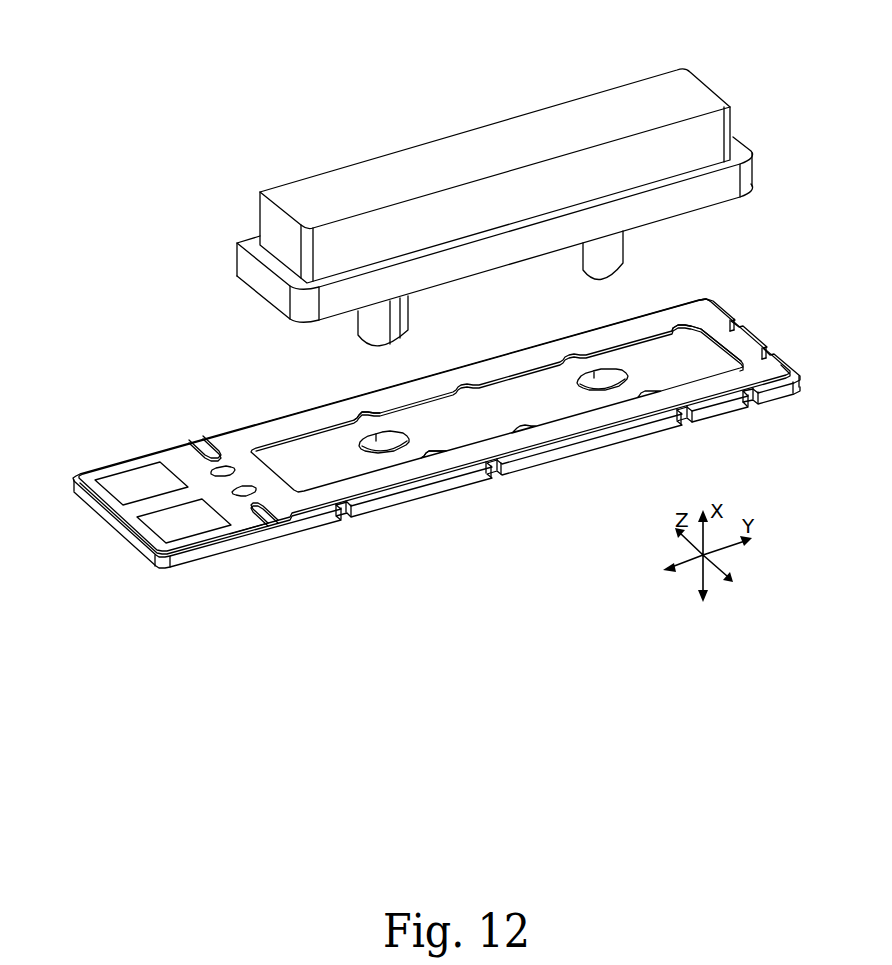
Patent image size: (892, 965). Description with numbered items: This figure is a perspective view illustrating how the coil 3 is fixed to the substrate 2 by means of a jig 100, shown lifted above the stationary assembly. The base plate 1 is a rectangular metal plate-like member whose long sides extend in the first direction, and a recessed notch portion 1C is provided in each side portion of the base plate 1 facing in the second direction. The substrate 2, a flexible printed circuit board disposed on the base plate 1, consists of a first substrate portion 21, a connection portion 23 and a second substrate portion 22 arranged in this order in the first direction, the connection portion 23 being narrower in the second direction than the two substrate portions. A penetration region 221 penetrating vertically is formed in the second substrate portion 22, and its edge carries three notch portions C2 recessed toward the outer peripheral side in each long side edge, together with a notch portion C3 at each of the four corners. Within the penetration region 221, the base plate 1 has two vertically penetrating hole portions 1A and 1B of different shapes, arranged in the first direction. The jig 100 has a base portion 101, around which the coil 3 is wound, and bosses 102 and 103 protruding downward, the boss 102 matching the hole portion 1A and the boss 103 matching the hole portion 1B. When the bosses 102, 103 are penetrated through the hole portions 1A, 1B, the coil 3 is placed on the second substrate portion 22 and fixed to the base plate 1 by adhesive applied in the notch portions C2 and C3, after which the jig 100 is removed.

The jig 100 is at (474, 181).
The base portion 101 is at (256, 207).
The boss 102 is at (410, 320).
The boss 103 is at (583, 266).
The coil 3 is at (237, 263).
The base plate 1 is at (436, 455).
The hole portion 1A is at (390, 456).
The hole portion 1B is at (604, 391).
The recessed notch portion 1C is at (227, 431).
The substrate 2 is at (434, 420).
The first substrate portion 21 is at (250, 535).
The second substrate portion 22 is at (377, 500).
The penetration region 221 is at (656, 357).
The connection portion 23 is at (263, 509).
The notch portion C2 is at (360, 416).
The notch portion C3 is at (692, 300).